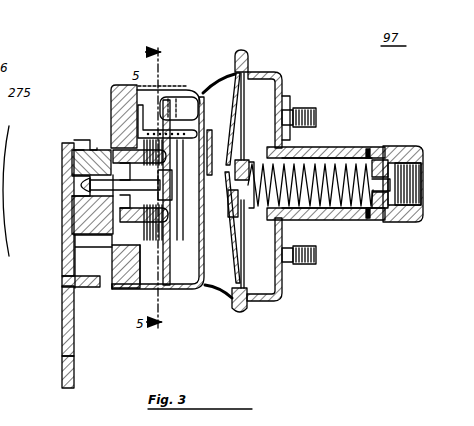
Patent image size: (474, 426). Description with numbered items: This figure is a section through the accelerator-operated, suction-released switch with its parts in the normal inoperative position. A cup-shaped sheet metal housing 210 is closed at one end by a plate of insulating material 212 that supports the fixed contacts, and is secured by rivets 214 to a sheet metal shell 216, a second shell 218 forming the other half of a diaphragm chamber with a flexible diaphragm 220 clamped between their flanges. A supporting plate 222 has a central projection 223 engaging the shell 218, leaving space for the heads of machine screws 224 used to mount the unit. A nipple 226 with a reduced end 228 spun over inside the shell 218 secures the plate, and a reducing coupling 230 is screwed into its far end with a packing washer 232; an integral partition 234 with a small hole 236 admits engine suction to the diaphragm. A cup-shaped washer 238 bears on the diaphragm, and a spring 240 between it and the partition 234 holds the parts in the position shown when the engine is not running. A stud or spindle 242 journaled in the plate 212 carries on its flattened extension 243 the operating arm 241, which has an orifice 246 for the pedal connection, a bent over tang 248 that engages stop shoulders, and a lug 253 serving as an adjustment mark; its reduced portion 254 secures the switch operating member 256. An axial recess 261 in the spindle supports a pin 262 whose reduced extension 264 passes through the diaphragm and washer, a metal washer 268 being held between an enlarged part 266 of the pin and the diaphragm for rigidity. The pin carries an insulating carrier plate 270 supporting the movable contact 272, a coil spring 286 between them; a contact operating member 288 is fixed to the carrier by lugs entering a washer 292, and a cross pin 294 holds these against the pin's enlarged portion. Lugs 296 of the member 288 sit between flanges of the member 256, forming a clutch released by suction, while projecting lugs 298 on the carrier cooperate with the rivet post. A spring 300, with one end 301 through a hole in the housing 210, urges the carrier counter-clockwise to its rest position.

The housing 210 is at (179, 292).
The plate of insulating material 212 is at (122, 292).
The rivets 214 is at (210, 110).
The sheet metal shell 216 is at (231, 305).
The second shell 218 is at (277, 93).
The flexible diaphragm 220 is at (280, 300).
The supporting plate 222 is at (304, 282).
The projection 223 is at (290, 140).
The machine screws 224 is at (302, 110).
The nipple 226 is at (323, 221).
The reduced end 228 is at (304, 224).
The reducing coupling 230 is at (392, 150).
The packing washer 232 is at (369, 152).
The partition 234 is at (390, 204).
The hole 236 is at (398, 180).
The cup-shaped washer 238 is at (288, 100).
The spring 240 is at (357, 150).
The operating arm 241 is at (62, 345).
The stud or spindle 242 is at (100, 148).
The flattened extension 243 is at (66, 187).
The orifice 246 is at (60, 370).
The bent over tang 248 is at (70, 140).
The lug 253 is at (67, 307).
The reduced portion 254 is at (104, 145).
The switch operating member 256 is at (130, 86).
The axial recess 261 is at (77, 203).
The pin 262 is at (70, 241).
The reduced extension 264 is at (242, 222).
The enlarged part 266 is at (213, 150).
The metal washer 268 is at (232, 160).
The carrier plate 270 is at (192, 250).
The movable contact 272 is at (133, 297).
The coil spring 286 is at (159, 360).
The contact operating member 288 is at (65, 282).
The washer 292 is at (168, 240).
The cross pin 294 is at (80, 183).
The lugs 296 is at (115, 242).
The projecting lugs 298 is at (166, 128).
The spring 300 is at (190, 99).
The spring end 301 is at (221, 303).